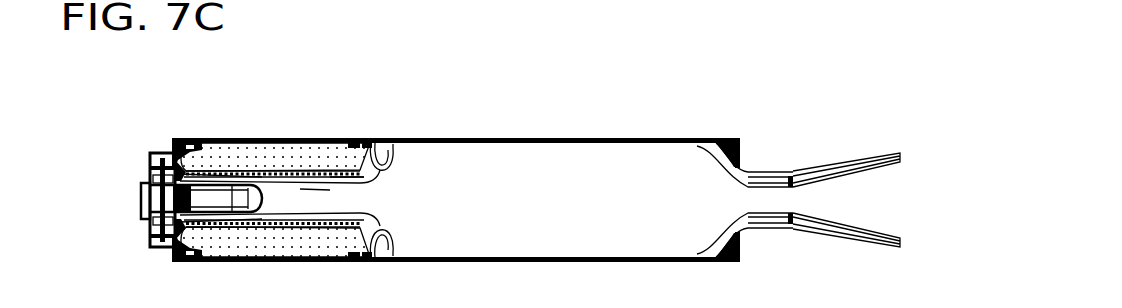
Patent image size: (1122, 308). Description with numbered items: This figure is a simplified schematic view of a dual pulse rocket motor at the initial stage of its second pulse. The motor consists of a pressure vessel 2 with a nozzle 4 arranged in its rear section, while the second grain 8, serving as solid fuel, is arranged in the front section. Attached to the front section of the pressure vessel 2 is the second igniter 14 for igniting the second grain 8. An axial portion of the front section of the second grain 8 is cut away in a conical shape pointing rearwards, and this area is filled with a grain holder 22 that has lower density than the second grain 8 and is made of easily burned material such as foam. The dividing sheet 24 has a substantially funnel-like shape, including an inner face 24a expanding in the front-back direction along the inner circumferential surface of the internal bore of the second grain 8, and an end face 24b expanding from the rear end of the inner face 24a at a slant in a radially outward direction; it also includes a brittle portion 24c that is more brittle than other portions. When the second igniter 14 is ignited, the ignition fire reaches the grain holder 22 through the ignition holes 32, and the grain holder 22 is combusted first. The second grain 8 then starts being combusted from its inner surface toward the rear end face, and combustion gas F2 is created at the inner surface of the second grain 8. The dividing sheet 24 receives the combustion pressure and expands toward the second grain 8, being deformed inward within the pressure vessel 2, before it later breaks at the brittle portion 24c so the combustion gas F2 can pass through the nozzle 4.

The pressure vessel 2 is at (550, 134).
The nozzle 4 is at (828, 166).
The second grain 8 is at (326, 153).
The second igniter 14 is at (148, 153).
The grain holder 22 is at (213, 156).
The dividing sheet 24 is at (323, 198).
The inner face 24a is at (300, 189).
The end face 24b is at (398, 158).
The brittle portion 24c is at (370, 186).
The ignition holes 32 is at (184, 150).
The combustion gas F2 is at (358, 202).